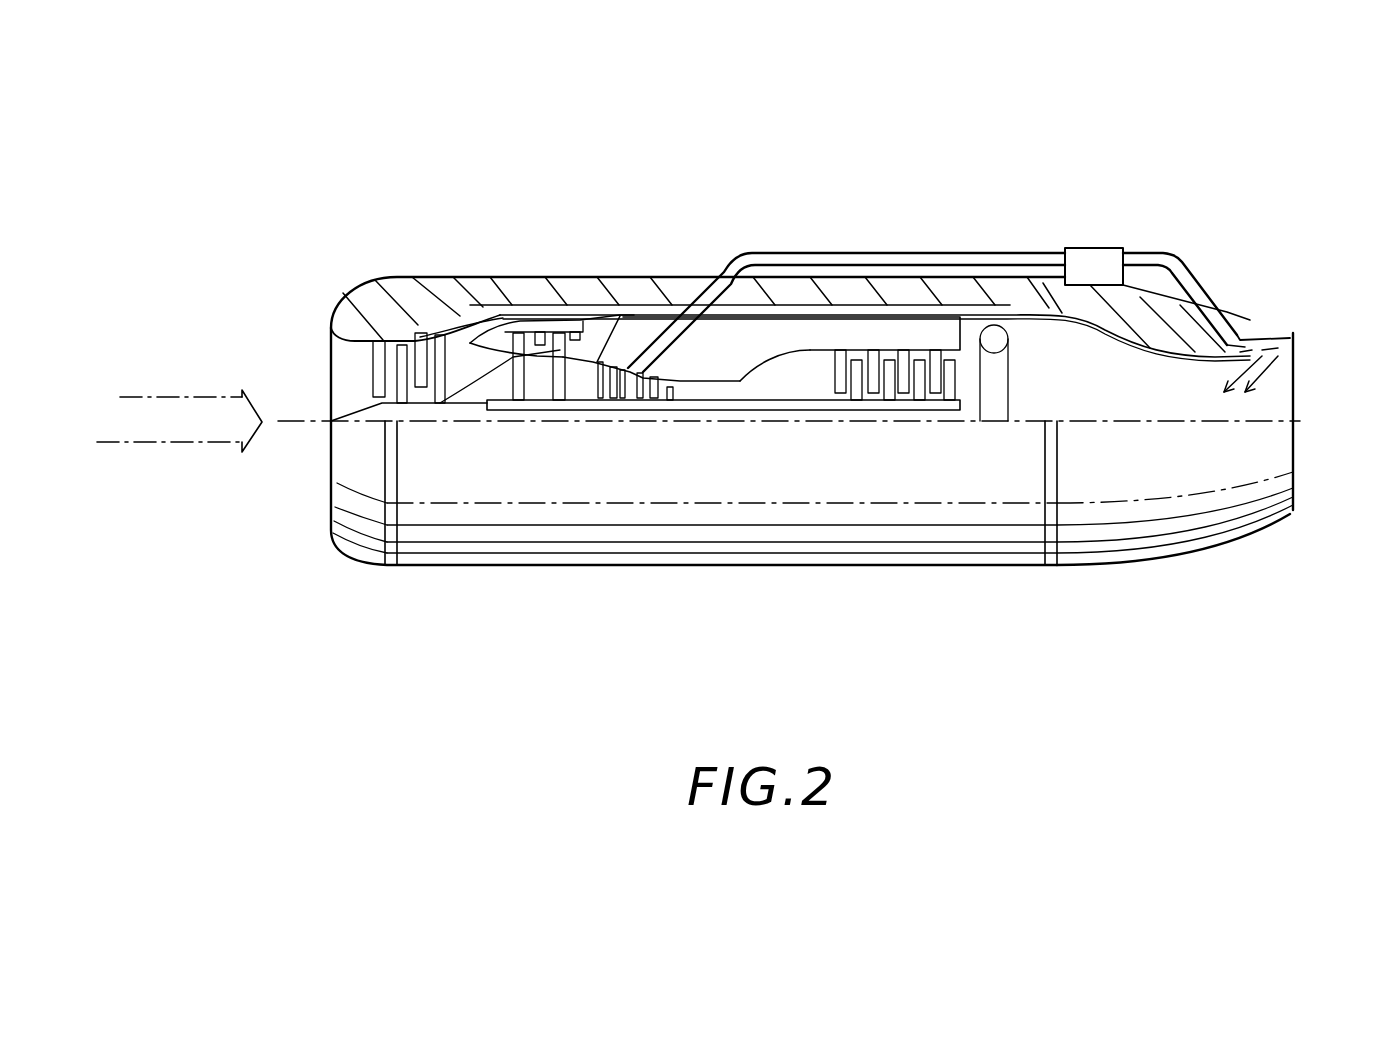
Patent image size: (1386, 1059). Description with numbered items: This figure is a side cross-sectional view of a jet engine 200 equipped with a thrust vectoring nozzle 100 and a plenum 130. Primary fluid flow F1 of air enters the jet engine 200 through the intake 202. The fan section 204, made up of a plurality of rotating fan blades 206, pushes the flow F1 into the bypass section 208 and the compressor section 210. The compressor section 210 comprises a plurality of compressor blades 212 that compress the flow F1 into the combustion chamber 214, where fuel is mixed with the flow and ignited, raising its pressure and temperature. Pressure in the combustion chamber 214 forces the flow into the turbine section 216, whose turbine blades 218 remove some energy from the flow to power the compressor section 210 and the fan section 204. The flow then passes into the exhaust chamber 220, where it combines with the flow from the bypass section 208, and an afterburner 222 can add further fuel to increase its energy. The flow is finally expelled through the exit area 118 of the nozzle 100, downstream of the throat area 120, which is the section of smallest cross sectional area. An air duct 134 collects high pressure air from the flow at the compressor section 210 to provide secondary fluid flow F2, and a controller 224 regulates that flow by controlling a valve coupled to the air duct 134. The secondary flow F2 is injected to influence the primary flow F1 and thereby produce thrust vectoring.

The jet engine 200 is at (976, 130).
The intake 202 is at (285, 509).
The fan section 204 is at (318, 356).
The fan blades 206 is at (452, 334).
The bypass section 208 is at (547, 333).
The compressor section 210 is at (490, 365).
The compressor blades 212 is at (683, 393).
The combustion chamber 214 is at (716, 382).
The turbine section 216 is at (818, 366).
The turbine blades 218 is at (840, 392).
The exhaust chamber 220 is at (1096, 403).
The afterburner 222 is at (992, 325).
The controller 224 is at (1097, 248).
The air duct 134 is at (737, 253).
The nozzle 100 is at (1050, 352).
The throat area 120 is at (1170, 350).
The plenum 130 is at (1262, 340).
The exit area 118 is at (1297, 464).
The primary fluid flow F1 is at (203, 395).
The secondary fluid flow F2 is at (1266, 370).